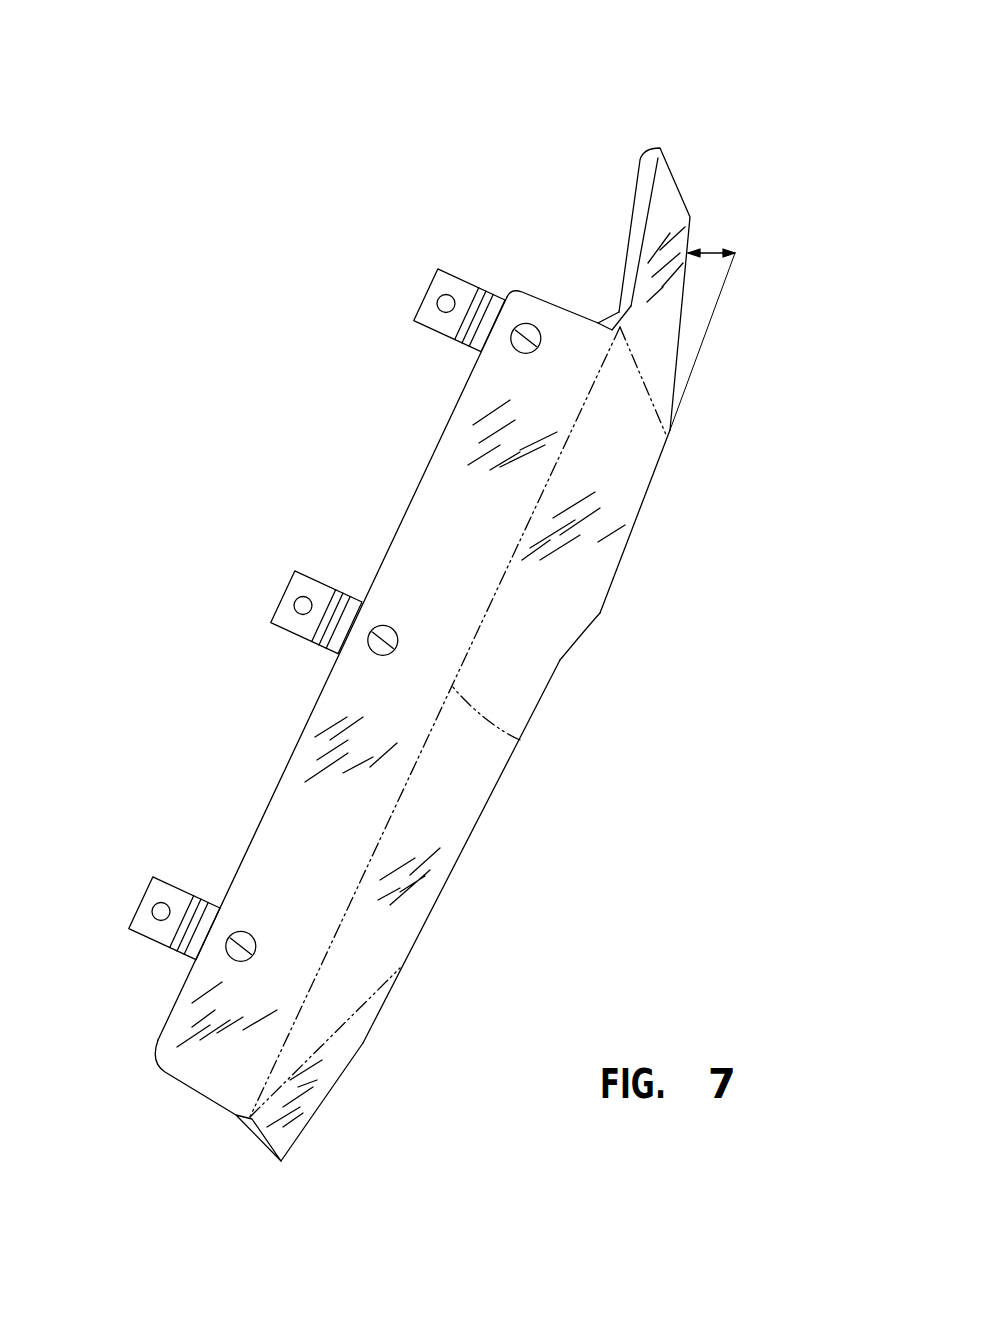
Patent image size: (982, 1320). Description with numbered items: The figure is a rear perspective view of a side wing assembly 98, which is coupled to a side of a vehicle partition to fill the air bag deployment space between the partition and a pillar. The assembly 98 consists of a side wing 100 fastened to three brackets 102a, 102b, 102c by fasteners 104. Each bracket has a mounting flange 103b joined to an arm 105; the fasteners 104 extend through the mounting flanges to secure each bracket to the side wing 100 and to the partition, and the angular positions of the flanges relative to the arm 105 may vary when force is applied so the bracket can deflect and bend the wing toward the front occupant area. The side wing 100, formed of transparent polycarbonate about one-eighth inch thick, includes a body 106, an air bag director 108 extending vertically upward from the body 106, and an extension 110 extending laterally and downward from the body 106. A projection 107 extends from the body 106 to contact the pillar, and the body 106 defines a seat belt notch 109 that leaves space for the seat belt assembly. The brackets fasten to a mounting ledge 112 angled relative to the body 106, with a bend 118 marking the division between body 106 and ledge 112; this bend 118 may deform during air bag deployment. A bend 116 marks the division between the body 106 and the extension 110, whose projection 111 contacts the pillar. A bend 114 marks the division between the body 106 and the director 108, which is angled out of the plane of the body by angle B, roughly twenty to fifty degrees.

The side wing assembly 98 is at (731, 117).
The side wing 100 is at (687, 470).
The bracket 102a is at (425, 295).
The bracket 102b is at (282, 597).
The bracket 102c is at (140, 900).
The mounting flange 103b is at (438, 322).
The fastener 104 is at (534, 323).
The arm 105 is at (484, 286).
The body 106 is at (598, 568).
The projection 107 is at (587, 607).
The air bag director 108 is at (673, 182).
The seat belt notch 109 is at (467, 847).
The extension 110 is at (292, 1133).
The projection 111 is at (363, 1045).
The mounting ledge 112 is at (434, 447).
The bend 114 is at (643, 367).
The bend 116 is at (322, 1097).
The bend 118 is at (520, 742).
The angle B is at (711, 251).